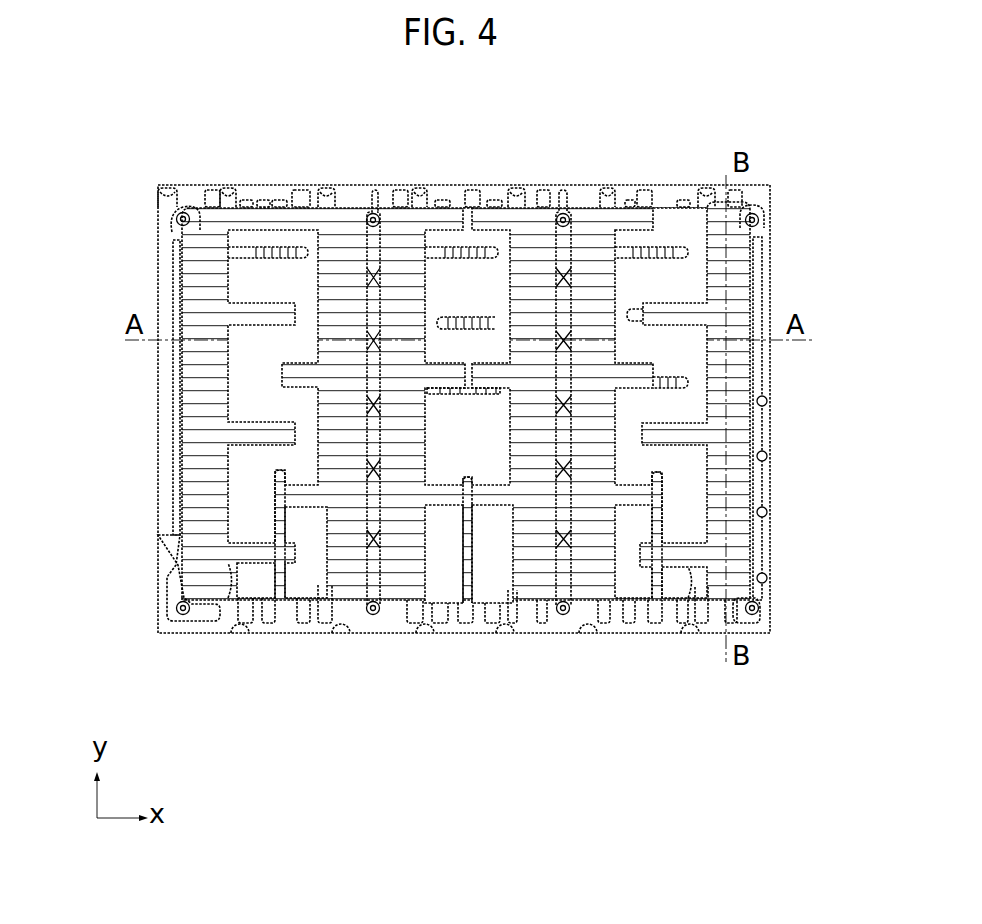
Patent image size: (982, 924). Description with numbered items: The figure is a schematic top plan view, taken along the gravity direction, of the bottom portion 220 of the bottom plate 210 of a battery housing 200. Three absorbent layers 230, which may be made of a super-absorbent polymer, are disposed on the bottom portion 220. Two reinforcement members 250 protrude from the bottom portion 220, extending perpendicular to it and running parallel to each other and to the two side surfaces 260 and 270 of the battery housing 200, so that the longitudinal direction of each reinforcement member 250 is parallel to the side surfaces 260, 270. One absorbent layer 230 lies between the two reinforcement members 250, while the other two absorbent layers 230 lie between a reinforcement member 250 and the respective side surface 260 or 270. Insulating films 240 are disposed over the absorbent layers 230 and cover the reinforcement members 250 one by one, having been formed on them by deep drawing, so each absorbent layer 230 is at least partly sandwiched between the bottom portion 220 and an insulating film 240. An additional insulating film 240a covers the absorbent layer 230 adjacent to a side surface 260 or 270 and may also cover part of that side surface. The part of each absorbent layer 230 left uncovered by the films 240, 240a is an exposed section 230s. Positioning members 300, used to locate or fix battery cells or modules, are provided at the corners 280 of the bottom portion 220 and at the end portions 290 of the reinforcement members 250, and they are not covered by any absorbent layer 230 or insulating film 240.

The battery housing 200 is at (800, 408).
The bottom plate 210 is at (771, 292).
The bottom portion 220 is at (690, 226).
The absorbent layer 230 is at (249, 212).
The exposed section 230s is at (245, 235).
The insulating film 240 is at (287, 207).
The additional insulating film 240a is at (250, 607).
The reinforcement member 250 is at (340, 630).
The side surface 260 is at (172, 425).
The side surface 270 is at (768, 560).
The corner 280 is at (140, 190).
The end portion 290 is at (394, 168).
The positioning member 300 is at (183, 212).